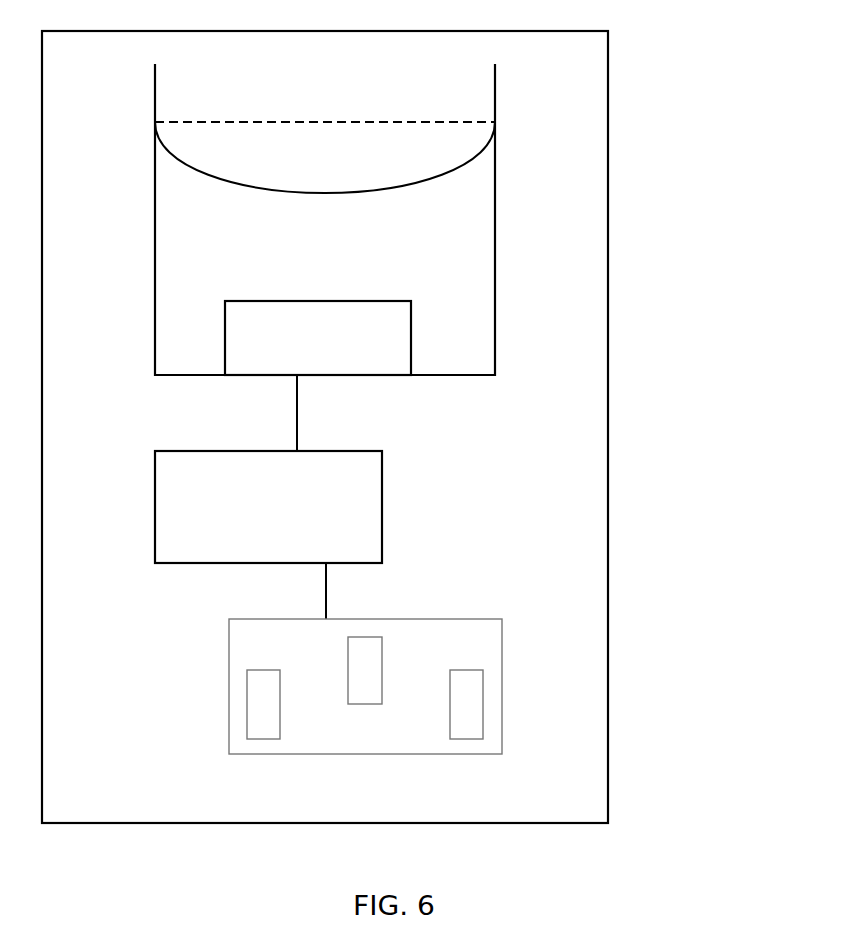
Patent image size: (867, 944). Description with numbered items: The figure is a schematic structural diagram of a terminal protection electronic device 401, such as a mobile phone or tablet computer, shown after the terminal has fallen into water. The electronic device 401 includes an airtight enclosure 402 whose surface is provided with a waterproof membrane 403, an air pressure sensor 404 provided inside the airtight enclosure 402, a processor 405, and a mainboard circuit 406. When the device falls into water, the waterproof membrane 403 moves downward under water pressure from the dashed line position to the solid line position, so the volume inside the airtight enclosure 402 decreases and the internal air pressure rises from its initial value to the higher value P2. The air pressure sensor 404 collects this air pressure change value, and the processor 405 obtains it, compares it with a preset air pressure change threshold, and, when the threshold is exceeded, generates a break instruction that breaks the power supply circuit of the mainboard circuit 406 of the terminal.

The electronic device 401 is at (608, 708).
The airtight enclosure 402 is at (495, 233).
The waterproof membrane 403 is at (268, 122).
The air pressure sensor 404 is at (411, 349).
The processor 405 is at (382, 505).
The mainboard circuit 406 is at (502, 713).